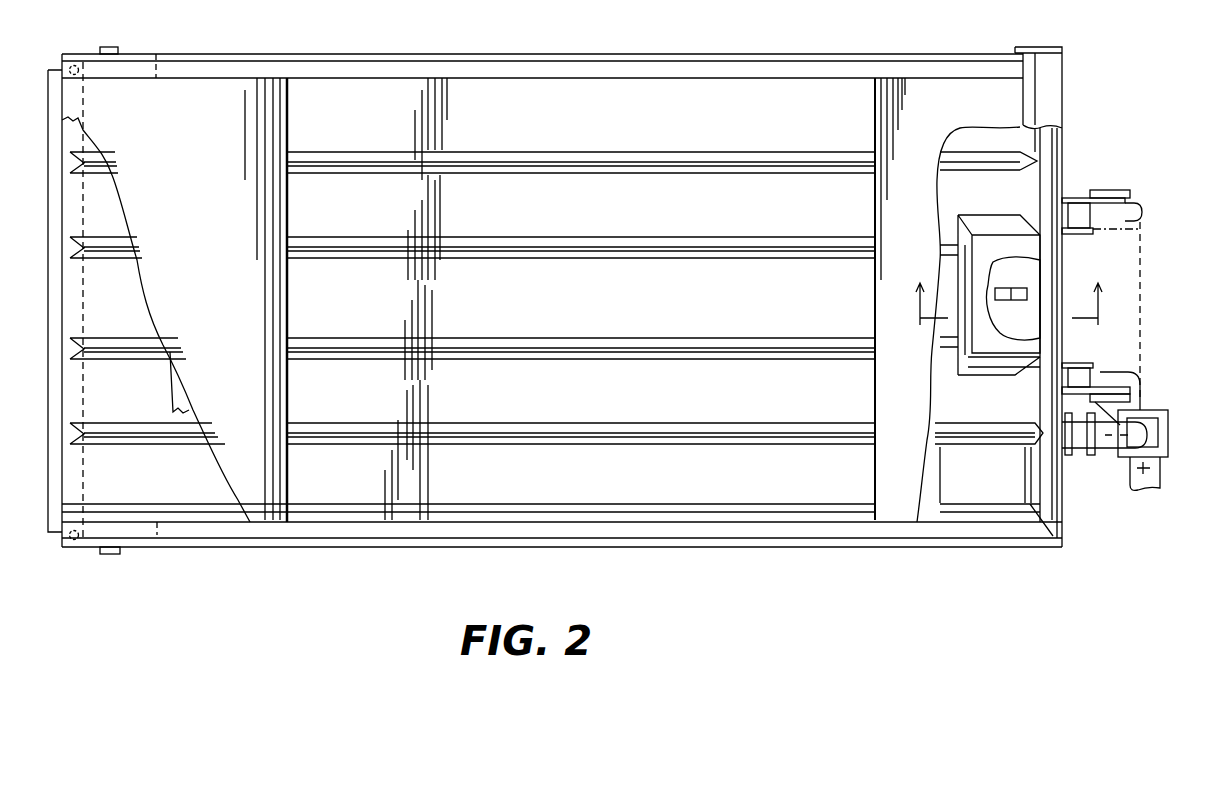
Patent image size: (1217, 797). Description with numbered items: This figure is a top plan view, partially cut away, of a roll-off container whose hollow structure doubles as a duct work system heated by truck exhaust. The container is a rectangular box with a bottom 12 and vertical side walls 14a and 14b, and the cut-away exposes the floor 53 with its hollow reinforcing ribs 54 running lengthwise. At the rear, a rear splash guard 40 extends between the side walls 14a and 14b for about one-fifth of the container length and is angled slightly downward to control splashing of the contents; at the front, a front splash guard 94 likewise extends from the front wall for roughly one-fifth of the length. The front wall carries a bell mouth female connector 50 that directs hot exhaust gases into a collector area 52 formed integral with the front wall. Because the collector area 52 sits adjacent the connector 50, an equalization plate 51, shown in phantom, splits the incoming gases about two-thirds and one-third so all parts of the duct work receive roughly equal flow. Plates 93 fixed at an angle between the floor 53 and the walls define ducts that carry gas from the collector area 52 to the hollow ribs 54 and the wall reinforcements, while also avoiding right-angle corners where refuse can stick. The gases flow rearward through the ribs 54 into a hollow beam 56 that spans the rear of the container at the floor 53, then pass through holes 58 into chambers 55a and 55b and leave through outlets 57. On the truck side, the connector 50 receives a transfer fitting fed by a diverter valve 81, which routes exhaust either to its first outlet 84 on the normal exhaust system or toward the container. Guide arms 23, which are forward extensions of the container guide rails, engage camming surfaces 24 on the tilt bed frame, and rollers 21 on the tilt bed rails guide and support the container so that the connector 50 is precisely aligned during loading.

The bottom 12 is at (1006, 290).
The vertical side wall 14a is at (673, 54).
The vertical side wall 14b is at (790, 550).
The rollers 21 is at (1079, 212).
The guide arms 23 is at (1108, 198).
The camming surfaces 24 is at (1142, 212).
The rear splash guard 40 is at (211, 154).
The bell mouth female connector 50 is at (1068, 457).
The equalization plate 51 is at (1040, 430).
The collector area 52 is at (1026, 458).
The floor 53 is at (572, 309).
The hollow ribs 54 is at (738, 150).
The chamber 55a is at (148, 524).
The chamber 55b is at (143, 66).
The hollow beam 56 is at (78, 466).
The outlets 57 is at (122, 40).
The holes 58 is at (75, 65).
The diverter valve 81 is at (1177, 428).
The first outlet 84 is at (1150, 468).
The plate 93 is at (750, 70).
The front splash guard 94 is at (930, 129).